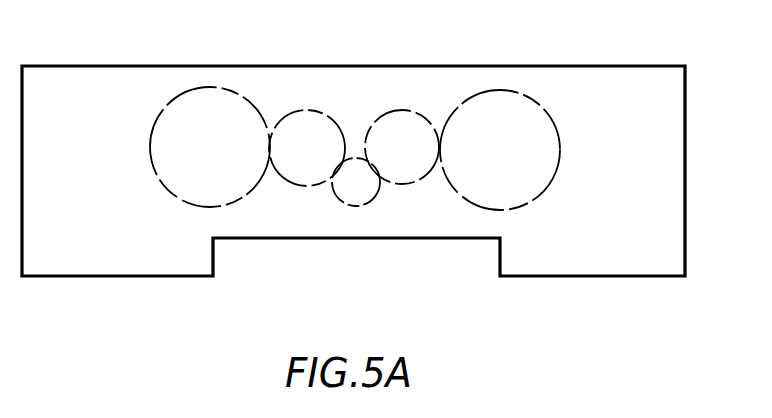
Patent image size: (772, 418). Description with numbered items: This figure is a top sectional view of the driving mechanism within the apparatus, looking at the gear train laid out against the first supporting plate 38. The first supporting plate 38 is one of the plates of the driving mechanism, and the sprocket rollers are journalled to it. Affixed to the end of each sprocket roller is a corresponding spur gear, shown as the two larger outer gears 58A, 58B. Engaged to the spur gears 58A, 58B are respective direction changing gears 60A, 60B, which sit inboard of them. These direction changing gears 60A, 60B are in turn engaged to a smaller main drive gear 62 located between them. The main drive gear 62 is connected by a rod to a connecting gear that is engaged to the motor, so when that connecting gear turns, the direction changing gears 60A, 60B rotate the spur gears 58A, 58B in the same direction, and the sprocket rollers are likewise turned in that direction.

The first supporting plate 38 is at (62, 277).
The spur gear 58A is at (196, 87).
The spur gear 58B is at (502, 90).
The direction changing gear 60A is at (303, 111).
The direction changing gear 60B is at (411, 109).
The main drive gear 62 is at (343, 204).